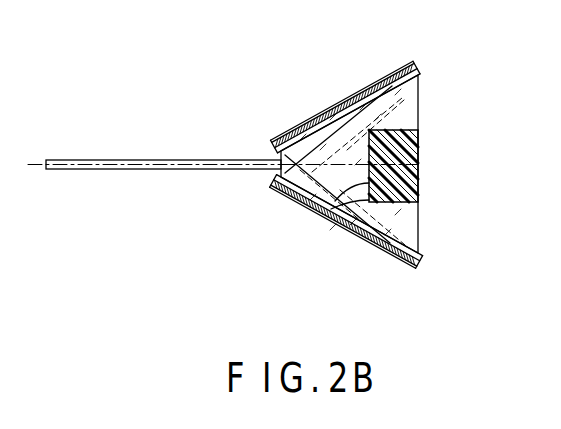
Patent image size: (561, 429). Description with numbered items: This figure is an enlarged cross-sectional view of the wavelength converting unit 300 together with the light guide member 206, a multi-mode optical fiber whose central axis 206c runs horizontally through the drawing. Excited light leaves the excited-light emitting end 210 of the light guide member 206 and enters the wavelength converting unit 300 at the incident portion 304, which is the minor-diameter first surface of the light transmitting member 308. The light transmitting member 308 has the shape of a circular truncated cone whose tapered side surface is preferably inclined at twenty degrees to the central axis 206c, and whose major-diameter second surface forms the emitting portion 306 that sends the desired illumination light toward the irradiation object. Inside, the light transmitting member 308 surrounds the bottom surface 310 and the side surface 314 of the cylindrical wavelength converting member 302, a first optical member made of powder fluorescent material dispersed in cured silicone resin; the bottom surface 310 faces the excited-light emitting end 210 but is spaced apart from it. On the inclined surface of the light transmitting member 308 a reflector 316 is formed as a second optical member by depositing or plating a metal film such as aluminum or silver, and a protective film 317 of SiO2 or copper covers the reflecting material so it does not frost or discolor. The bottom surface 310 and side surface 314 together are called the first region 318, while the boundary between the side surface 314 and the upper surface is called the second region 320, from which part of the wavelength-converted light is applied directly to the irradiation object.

The light guide member 206 is at (148, 169).
The central axis of the light guide member 206c is at (418, 164).
The excited-light emitting end 210 is at (282, 146).
The wavelength converting unit 300 is at (281, 206).
The wavelength converting member 302 is at (389, 78).
The incident portion 304 is at (279, 154).
The emitting portion 306 is at (419, 112).
The light transmitting member 308 is at (331, 121).
The bottom surface 310 is at (333, 208).
The side surface 314 is at (364, 228).
The reflector 316 is at (365, 90).
The protective film 317 is at (413, 61).
The first region 318 is at (397, 287).
The second region 320 is at (420, 203).